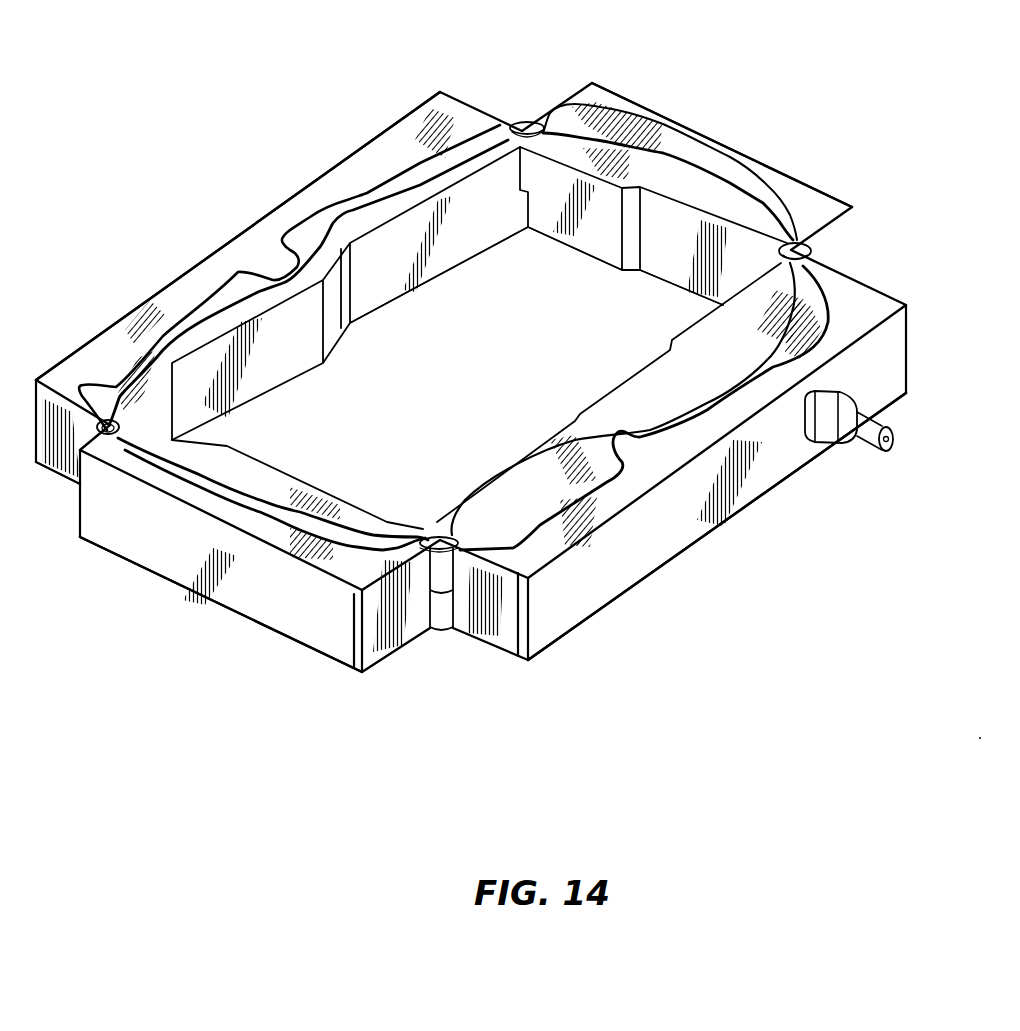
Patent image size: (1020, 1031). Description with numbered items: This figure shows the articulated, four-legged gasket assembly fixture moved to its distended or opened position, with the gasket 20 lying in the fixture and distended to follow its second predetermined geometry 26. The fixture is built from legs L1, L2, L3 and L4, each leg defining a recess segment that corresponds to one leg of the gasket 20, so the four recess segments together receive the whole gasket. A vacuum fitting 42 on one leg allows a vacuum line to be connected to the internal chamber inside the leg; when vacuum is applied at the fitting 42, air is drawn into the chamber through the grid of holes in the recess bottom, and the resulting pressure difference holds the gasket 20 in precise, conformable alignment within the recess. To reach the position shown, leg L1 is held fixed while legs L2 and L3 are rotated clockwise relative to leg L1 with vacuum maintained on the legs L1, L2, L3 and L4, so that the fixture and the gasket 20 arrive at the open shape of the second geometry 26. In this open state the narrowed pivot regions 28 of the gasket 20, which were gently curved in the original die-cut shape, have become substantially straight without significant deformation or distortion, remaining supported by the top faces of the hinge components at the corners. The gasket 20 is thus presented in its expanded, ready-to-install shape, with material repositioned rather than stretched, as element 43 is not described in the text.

The gasket 20 is at (545, 472).
The second predetermined geometry 26 is at (475, 704).
The pivot regions 28 is at (525, 120).
The vacuum fitting 42 is at (860, 448).
The rib 43 is at (591, 112).
The leg L1 is at (297, 186).
The leg L2 is at (685, 117).
The leg L3 is at (280, 645).
The leg L4 is at (622, 607).